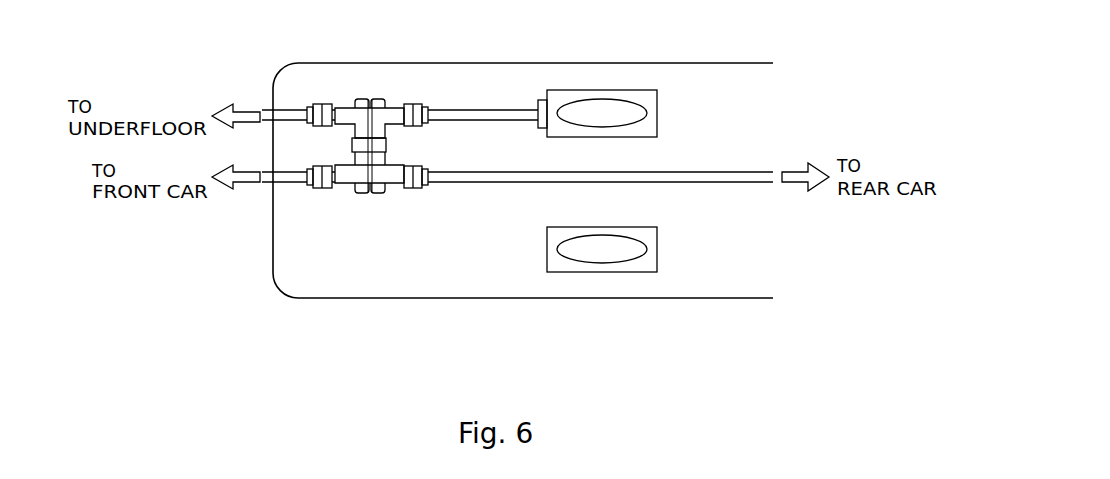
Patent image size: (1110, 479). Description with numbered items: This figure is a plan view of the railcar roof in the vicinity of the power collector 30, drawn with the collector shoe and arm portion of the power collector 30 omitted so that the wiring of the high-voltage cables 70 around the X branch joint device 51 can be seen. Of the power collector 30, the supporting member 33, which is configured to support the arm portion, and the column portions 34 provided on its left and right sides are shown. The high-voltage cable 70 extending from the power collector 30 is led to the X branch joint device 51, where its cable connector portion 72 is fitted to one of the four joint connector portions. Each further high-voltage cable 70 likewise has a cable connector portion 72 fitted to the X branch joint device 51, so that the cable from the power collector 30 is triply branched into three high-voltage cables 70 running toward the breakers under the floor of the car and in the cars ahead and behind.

The high-voltage cable 70 is at (300, 110).
The cable connector portion 72 is at (338, 106).
The X branch joint device 51 is at (367, 143).
The power collector 30 is at (571, 88).
The supporting member 33 is at (641, 90).
The column portion 34 is at (604, 110).